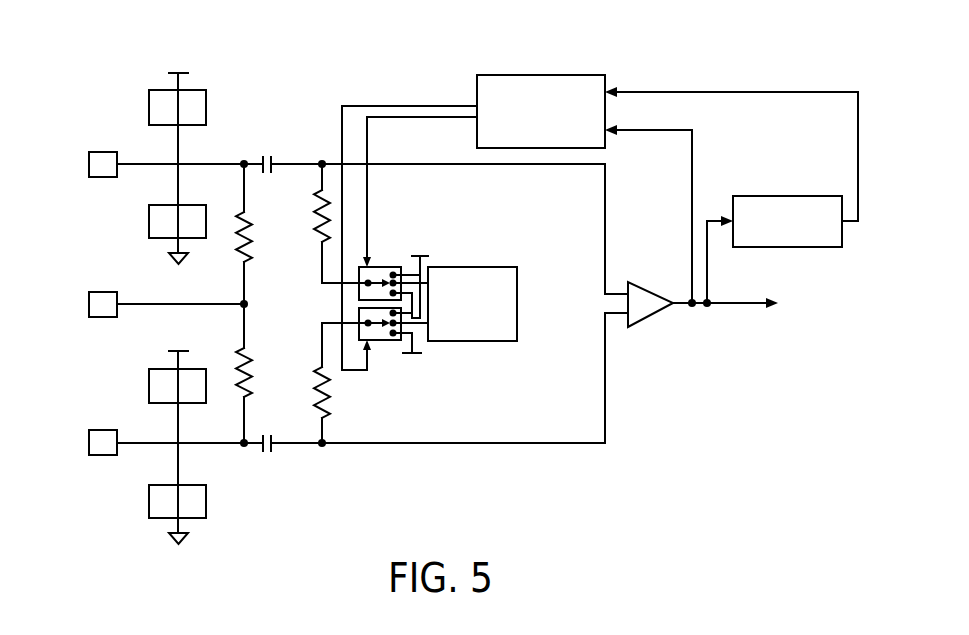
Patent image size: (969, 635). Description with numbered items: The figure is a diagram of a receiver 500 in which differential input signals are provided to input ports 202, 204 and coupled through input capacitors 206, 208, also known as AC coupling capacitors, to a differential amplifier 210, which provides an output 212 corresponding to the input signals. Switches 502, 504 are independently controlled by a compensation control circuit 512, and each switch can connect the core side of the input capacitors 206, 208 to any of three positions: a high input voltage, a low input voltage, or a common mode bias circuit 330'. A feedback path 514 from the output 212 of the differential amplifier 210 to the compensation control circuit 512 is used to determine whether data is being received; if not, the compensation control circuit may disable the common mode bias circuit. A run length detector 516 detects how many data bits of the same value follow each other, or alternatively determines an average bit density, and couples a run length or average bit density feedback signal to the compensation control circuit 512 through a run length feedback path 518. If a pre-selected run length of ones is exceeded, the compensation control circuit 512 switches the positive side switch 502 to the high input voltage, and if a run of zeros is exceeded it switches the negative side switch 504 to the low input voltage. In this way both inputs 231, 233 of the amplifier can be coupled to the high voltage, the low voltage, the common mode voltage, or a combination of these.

The input port 202 is at (103, 150).
The input port 204 is at (103, 427).
The input capacitor 206 is at (273, 157).
The input capacitor 208 is at (273, 448).
The differential amplifier 210 is at (660, 293).
The output 212 is at (678, 308).
The input 231 is at (623, 315).
The input 233 is at (620, 293).
The common mode bias circuit 330' is at (472, 282).
The receiver 500 is at (440, 280).
The switch 502 is at (388, 265).
The switch 504 is at (380, 342).
The compensation control circuit 512 is at (530, 73).
The feedback path 514 is at (693, 145).
The run length detector 516 is at (790, 195).
The run length feedback path 518 is at (677, 90).